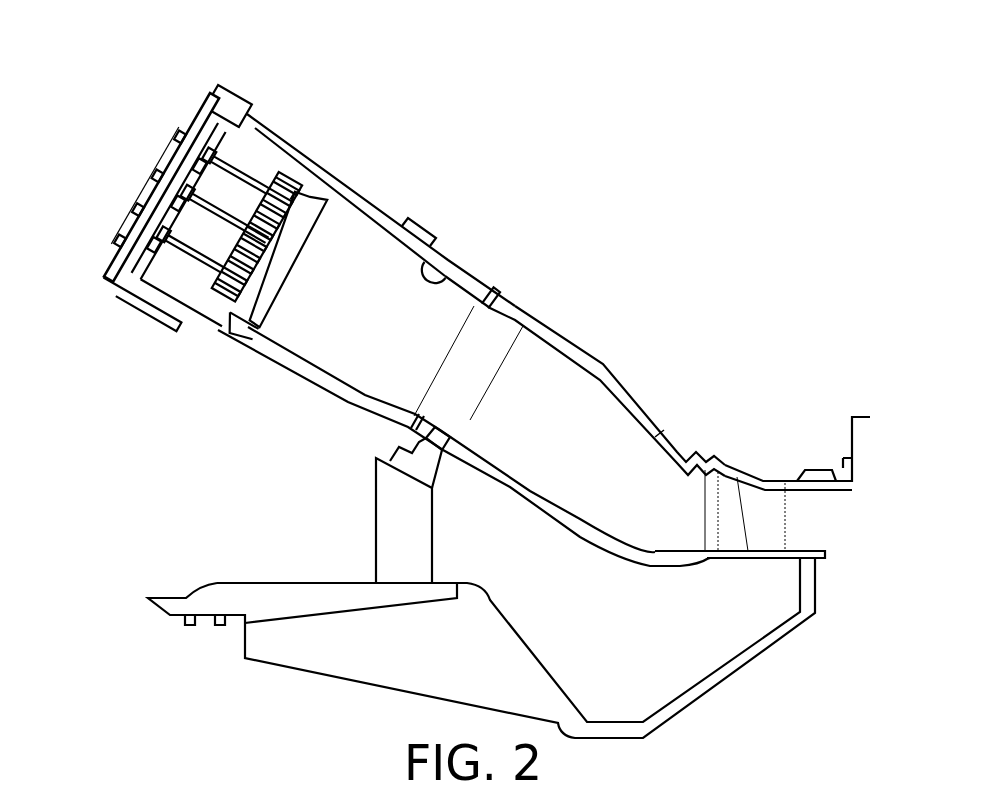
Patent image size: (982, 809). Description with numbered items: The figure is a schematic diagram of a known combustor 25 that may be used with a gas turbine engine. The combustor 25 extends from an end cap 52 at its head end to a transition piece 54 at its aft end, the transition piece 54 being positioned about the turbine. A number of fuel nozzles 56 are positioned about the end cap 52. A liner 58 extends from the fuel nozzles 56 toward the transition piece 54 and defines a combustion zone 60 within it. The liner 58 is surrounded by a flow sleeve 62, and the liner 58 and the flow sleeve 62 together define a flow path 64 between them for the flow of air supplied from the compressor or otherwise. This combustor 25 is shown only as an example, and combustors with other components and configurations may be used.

The combustor 25 is at (463, 382).
The end cap 52 is at (120, 237).
The transition piece 54 is at (635, 411).
The fuel nozzles 56 is at (268, 178).
The liner 58 is at (446, 276).
The combustion zone 60 is at (382, 324).
The flow sleeve 62 is at (570, 340).
The flow path 64 is at (530, 320).